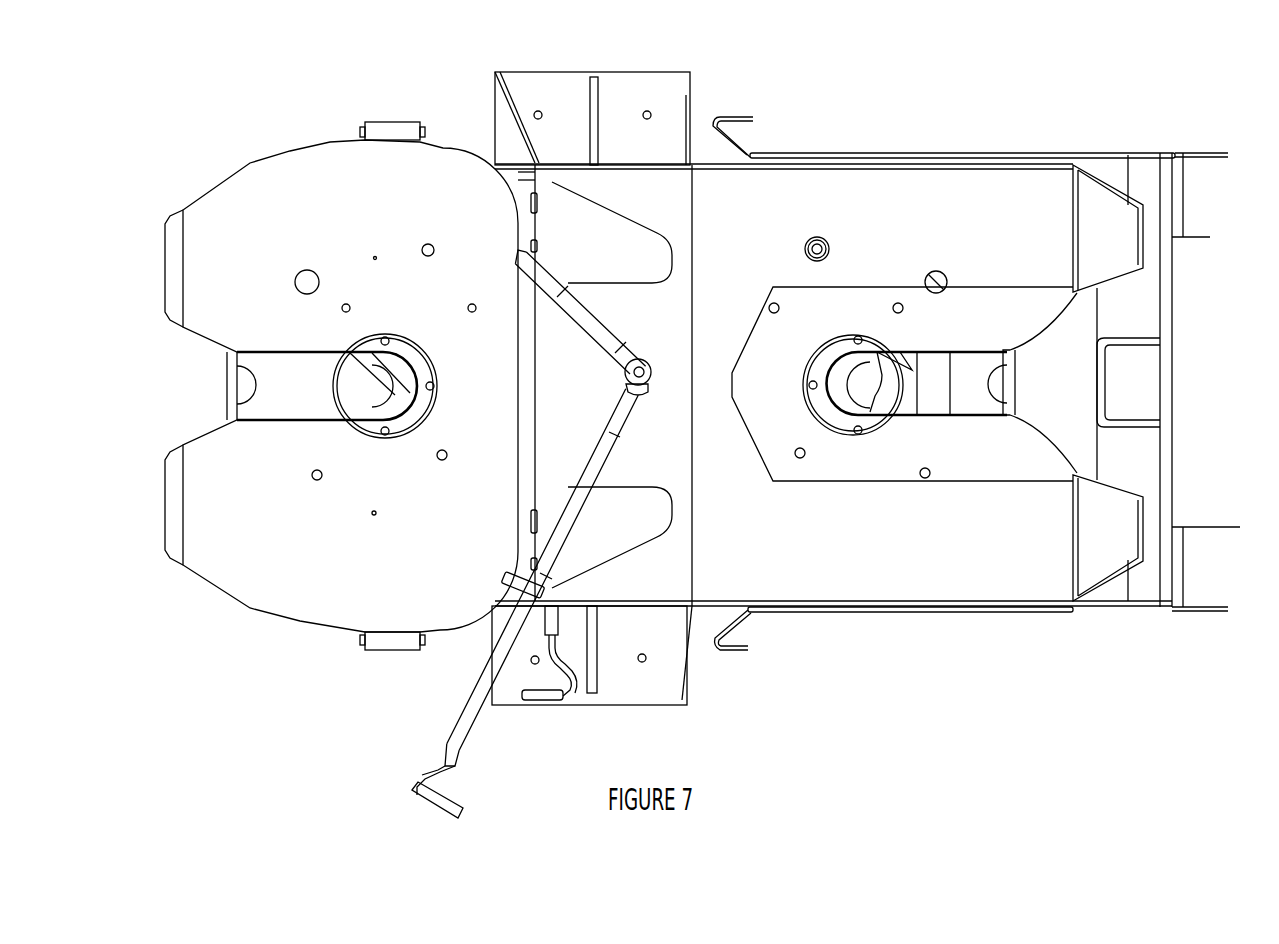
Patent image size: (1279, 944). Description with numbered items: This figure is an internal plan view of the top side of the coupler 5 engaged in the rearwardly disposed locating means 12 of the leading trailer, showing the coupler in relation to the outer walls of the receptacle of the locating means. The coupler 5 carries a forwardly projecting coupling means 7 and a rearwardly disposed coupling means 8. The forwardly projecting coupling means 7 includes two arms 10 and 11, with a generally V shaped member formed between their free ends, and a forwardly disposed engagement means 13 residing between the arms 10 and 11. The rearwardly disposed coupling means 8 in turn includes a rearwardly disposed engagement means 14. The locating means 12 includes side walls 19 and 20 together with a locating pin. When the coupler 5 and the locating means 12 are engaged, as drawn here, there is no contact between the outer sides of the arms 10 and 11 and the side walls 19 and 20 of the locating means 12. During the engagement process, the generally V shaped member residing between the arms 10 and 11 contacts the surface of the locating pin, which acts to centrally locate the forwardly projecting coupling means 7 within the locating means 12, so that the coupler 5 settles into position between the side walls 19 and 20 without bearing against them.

The coupler 5 is at (370, 113).
The forwardly projecting coupling means 7 is at (861, 640).
The rearwardly disposed coupling means 8 is at (252, 615).
The arm 10 is at (1012, 163).
The arm 11 is at (1017, 603).
The rearwardly disposed locating means 12 is at (838, 133).
The forwardly disposed engagement means 13 is at (898, 386).
The rearwardly disposed engagement means 14 is at (377, 393).
The side wall 19 is at (1097, 605).
The side wall 20 is at (929, 153).